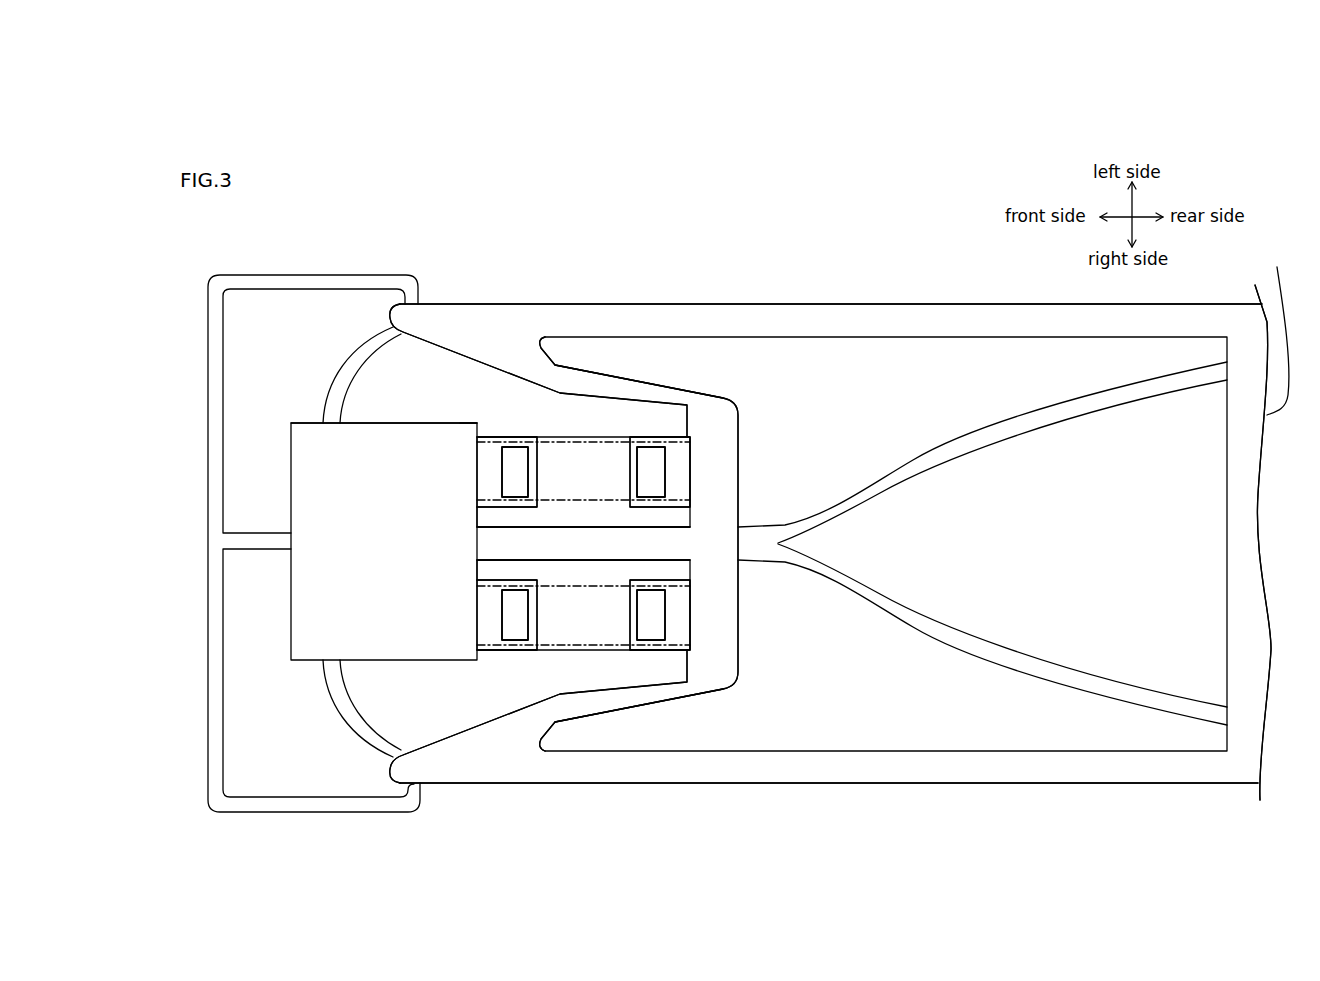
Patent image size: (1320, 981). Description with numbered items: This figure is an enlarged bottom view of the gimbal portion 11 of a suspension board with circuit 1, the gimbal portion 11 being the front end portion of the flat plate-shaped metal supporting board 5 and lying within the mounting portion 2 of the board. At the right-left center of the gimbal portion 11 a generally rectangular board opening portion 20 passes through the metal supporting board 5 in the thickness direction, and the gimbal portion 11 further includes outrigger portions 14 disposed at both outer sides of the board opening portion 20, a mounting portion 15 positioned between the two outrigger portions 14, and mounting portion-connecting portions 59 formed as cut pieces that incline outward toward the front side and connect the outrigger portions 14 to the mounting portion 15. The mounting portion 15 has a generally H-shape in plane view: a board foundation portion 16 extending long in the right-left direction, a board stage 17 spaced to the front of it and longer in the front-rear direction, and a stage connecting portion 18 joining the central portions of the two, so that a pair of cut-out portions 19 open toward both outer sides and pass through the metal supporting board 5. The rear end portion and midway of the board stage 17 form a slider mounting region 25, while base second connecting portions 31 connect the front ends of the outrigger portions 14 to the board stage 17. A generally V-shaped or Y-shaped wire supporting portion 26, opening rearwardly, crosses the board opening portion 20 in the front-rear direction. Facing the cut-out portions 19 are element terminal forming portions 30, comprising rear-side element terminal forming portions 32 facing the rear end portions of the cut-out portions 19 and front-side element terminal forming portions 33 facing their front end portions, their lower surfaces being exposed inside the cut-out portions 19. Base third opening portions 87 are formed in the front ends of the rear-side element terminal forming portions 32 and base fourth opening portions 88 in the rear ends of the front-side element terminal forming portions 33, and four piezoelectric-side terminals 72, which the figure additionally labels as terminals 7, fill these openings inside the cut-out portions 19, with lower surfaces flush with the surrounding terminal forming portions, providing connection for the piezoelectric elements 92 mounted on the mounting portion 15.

The mounting portion 2 is at (781, 885).
The suspension board with circuit 1 is at (639, 544).
The metal supporting board 5 is at (291, 637).
The contact 7 is at (583, 543).
The gimbal portion 11 is at (601, 298).
The outrigger portions 14 is at (742, 304).
The mounting portion 15 is at (747, 477).
The board foundation portion 16 is at (747, 636).
The board stage 17 is at (393, 423).
The stage connecting portion 18 is at (540, 543).
The cut-out portions 19 is at (580, 527).
The board opening portion 20 is at (816, 329).
The slider mounting region 25 is at (425, 655).
The wire supporting portion 26 is at (1083, 673).
The element terminal forming portions 30 is at (583, 543).
The base second connecting portions 31 is at (279, 272).
The rear-side element terminal forming portions 32 is at (694, 835).
The front-side element terminal forming portions 33 is at (425, 822).
The mounting portion-connecting portions 59 is at (633, 380).
The piezoelectric-side terminals 72 is at (527, 837).
The base third opening portions 87 is at (640, 457).
The base fourth opening portions 88 is at (519, 447).
The piezoelectric elements 92 is at (558, 443).